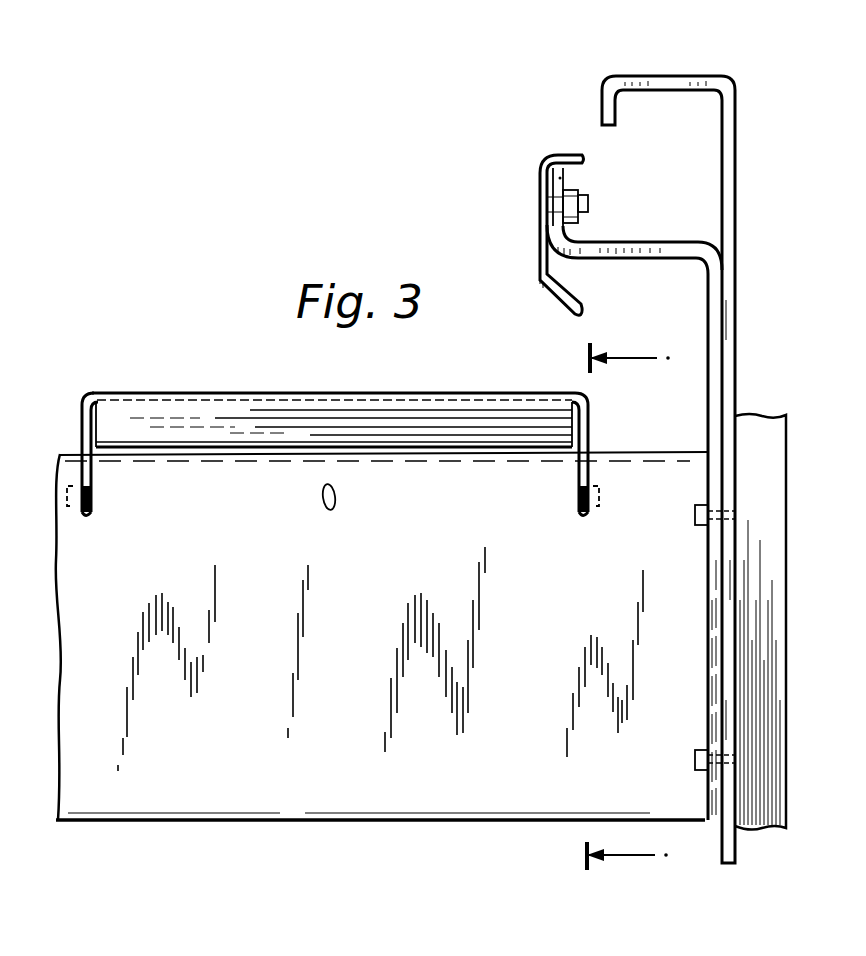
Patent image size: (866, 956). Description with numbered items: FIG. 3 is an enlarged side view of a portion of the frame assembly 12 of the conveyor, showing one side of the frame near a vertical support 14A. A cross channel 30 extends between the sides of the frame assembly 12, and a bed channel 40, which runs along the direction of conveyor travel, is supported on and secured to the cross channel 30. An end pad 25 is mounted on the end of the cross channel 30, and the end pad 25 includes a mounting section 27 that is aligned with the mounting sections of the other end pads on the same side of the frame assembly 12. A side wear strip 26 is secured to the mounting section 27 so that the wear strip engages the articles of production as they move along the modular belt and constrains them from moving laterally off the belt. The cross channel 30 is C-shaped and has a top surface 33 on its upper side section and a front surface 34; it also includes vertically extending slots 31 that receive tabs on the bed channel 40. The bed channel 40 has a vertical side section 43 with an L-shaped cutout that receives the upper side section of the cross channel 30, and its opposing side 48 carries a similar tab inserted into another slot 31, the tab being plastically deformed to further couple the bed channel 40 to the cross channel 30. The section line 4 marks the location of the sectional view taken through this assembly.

The section line 4- 4 is at (628, 610).
The frame assembly 12 is at (738, 170).
The vertical support 14A is at (762, 495).
The end pad 25 is at (662, 243).
The side wear strip 26 is at (566, 153).
The mounting section 27 is at (562, 178).
The cross channel 30 is at (203, 470).
The slot 31 is at (87, 513).
The top surface 33 is at (655, 446).
The front surface 34 is at (420, 470).
The bed channel 40 is at (350, 400).
The vertical side section 43 is at (585, 420).
The opposing side 48 is at (76, 410).